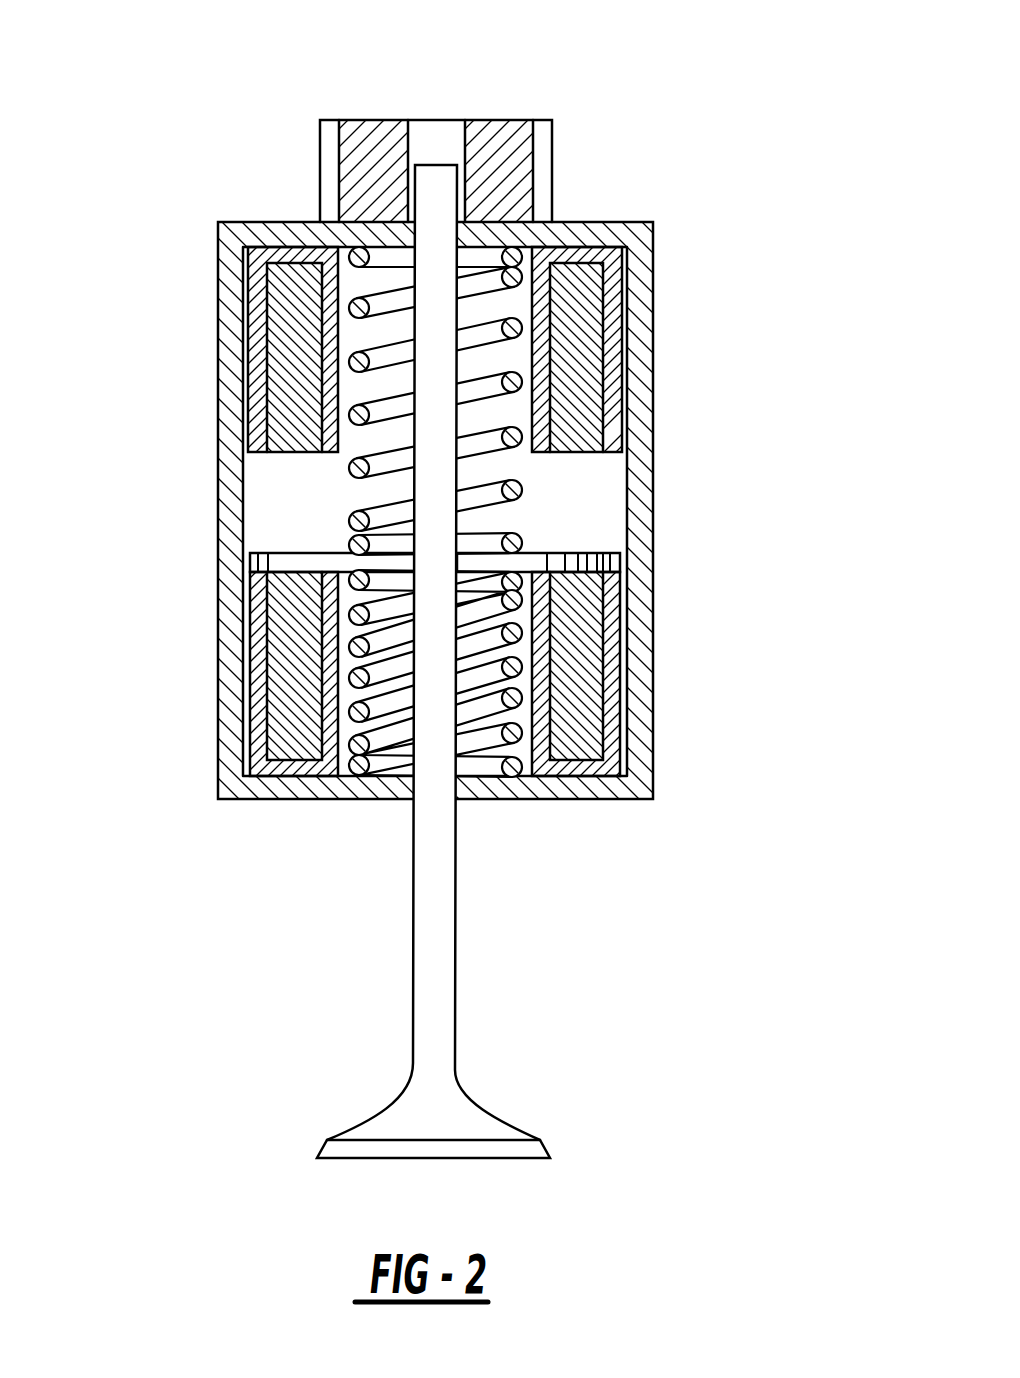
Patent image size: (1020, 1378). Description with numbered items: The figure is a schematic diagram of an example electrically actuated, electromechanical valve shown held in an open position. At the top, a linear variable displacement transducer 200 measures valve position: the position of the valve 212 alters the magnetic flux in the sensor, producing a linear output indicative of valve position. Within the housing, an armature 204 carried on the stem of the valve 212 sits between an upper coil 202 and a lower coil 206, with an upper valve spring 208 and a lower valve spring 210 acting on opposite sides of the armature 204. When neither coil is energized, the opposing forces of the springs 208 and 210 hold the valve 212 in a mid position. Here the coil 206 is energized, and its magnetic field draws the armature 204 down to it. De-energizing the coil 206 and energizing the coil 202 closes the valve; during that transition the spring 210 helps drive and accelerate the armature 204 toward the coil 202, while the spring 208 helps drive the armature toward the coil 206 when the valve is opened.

The linear variable displacement transducer 200 is at (378, 120).
The coil 202 is at (288, 350).
The armature 204 is at (288, 553).
The coil 206 is at (283, 657).
The valve spring 208 is at (520, 507).
The valve spring 210 is at (512, 770).
The valve 212 is at (472, 1117).